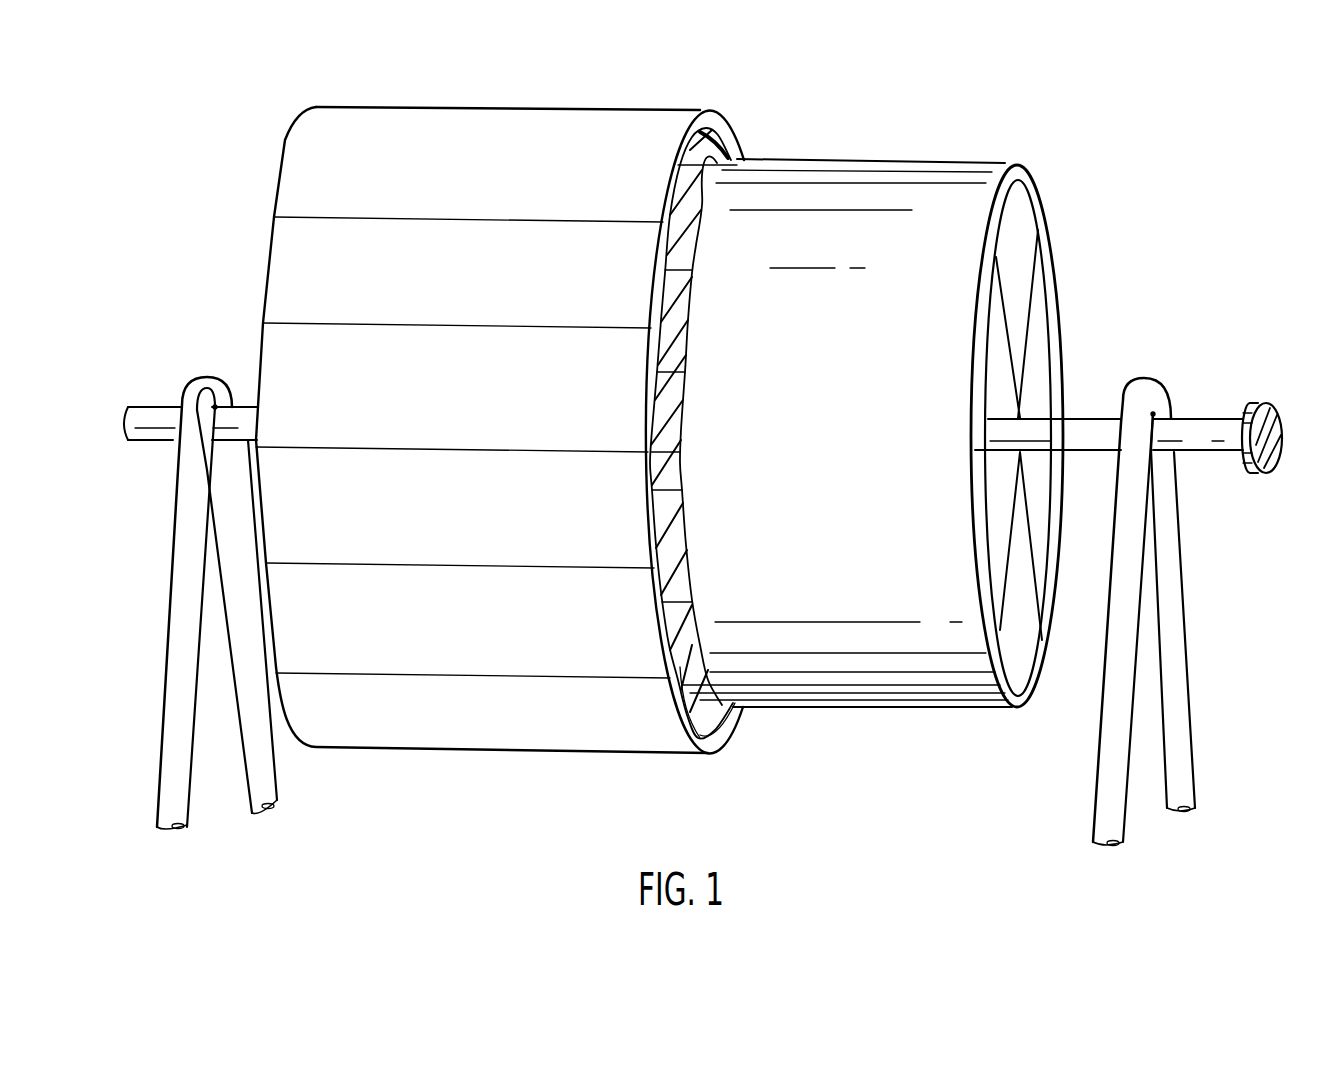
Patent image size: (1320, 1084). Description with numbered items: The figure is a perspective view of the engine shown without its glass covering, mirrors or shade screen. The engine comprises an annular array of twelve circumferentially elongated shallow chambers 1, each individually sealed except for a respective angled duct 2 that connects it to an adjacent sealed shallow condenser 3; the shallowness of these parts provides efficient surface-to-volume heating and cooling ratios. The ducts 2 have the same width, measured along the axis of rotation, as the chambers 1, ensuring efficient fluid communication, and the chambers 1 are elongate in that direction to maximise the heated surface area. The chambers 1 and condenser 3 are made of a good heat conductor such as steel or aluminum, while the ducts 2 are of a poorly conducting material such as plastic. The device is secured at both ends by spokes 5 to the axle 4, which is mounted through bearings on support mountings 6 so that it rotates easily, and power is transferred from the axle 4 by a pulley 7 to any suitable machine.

The chambers 1 is at (528, 128).
The angled ducts 2 is at (712, 162).
The condenser 3 is at (1033, 188).
The axle 4 is at (245, 410).
The spokes 5 is at (1011, 357).
The support mountings 6 is at (258, 757).
The pulley 7 is at (1260, 467).